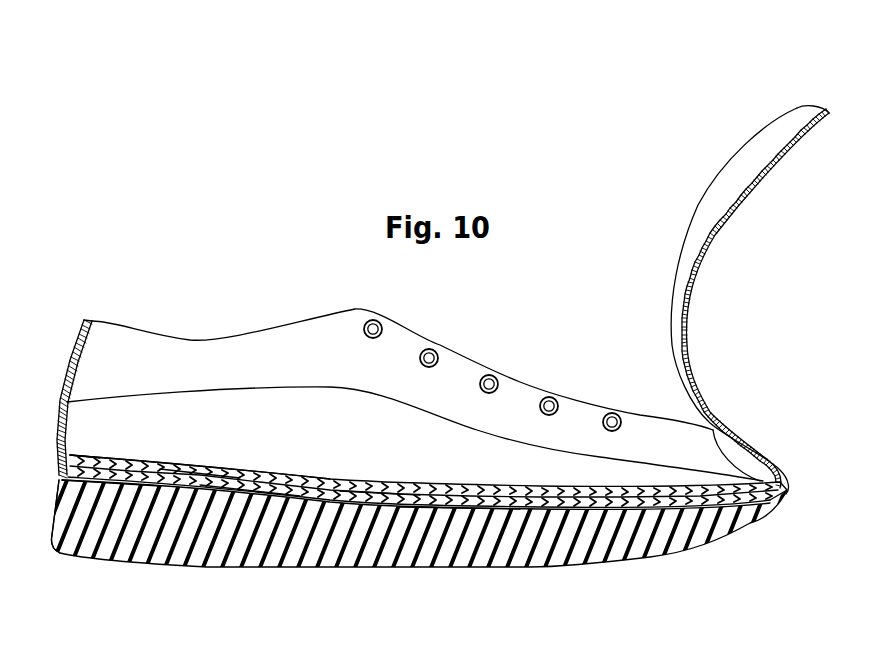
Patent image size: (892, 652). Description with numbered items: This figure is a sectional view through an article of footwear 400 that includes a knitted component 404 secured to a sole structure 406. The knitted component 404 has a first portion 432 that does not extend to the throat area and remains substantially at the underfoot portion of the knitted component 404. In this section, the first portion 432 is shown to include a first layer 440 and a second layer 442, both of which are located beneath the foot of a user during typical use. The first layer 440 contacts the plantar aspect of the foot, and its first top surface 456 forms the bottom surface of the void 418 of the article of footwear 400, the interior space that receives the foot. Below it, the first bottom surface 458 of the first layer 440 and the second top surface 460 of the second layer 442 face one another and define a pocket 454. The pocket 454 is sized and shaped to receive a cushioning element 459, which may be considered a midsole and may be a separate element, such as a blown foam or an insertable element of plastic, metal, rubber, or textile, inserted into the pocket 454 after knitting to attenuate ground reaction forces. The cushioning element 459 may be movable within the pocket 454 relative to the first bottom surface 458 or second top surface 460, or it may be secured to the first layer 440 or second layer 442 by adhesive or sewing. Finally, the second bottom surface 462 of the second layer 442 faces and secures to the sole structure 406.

The article of footwear 400 is at (187, 309).
The knitted component 404 is at (353, 318).
The sole structure 406 is at (614, 557).
The void 418 is at (349, 440).
The first portion 432 is at (155, 458).
The first layer 440 is at (483, 484).
The second layer 442 is at (462, 508).
The pocket 454 is at (250, 486).
The first top surface 456 is at (199, 467).
The first bottom surface 458 is at (112, 481).
The cushioning element 459 is at (378, 497).
The second top surface 460 is at (105, 455).
The second bottom surface 462 is at (85, 547).